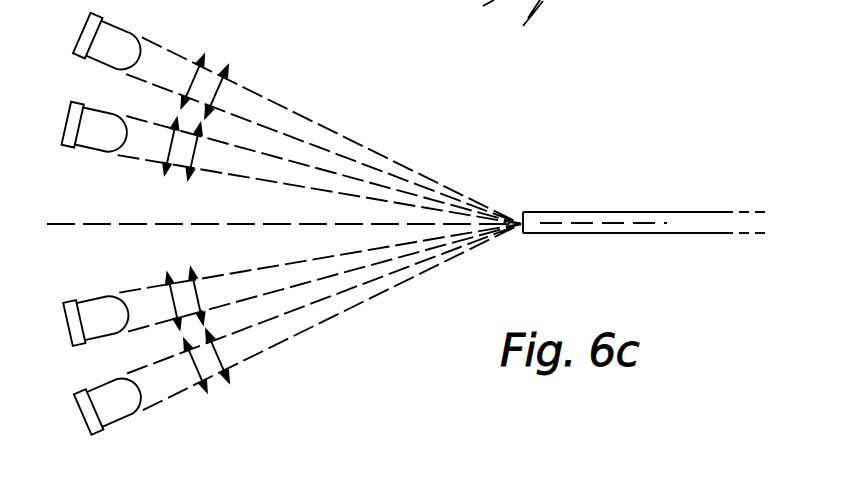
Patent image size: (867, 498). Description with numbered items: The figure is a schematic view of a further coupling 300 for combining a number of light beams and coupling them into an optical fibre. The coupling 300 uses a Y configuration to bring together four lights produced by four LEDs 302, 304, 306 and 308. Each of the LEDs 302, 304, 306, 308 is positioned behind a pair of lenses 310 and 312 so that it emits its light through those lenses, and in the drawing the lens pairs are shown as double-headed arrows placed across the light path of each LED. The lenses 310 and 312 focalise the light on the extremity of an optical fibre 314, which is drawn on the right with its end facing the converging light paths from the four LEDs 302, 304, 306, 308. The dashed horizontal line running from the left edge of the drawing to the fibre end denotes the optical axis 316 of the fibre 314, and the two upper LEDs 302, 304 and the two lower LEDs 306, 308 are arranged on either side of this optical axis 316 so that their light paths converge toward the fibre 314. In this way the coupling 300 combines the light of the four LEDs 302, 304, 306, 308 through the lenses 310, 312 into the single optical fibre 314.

The coupling 300 is at (437, 137).
The LED 302 is at (104, 50).
The LED 304 is at (100, 138).
The LED 306 is at (95, 305).
The LED 308 is at (115, 407).
The lens 310 is at (228, 88).
The lens 312 is at (194, 78).
The optical fibre 314 is at (636, 212).
The optical axis 316 is at (102, 228).